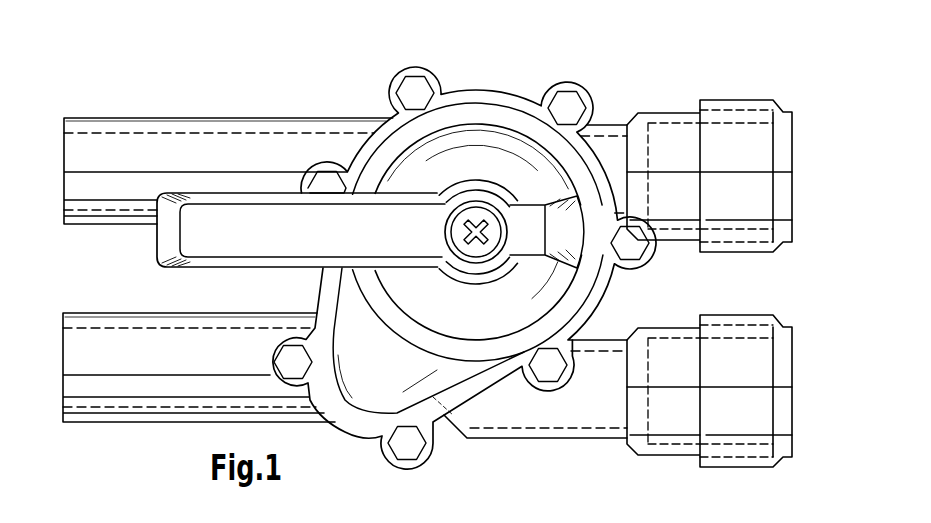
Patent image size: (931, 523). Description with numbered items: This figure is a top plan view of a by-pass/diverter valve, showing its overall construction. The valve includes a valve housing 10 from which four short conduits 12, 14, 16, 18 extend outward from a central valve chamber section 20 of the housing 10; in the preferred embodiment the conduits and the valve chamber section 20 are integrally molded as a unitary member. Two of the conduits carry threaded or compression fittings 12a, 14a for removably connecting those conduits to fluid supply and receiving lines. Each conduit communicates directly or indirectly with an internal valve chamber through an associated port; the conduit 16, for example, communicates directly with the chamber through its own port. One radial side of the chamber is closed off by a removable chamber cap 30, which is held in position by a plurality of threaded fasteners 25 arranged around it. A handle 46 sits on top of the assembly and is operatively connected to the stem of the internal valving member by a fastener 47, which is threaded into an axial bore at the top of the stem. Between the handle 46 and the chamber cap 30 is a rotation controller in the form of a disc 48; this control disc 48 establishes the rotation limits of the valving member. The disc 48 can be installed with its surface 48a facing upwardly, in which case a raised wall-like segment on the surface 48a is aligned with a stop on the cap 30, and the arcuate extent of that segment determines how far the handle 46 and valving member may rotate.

The valve housing 10 is at (381, 248).
The conduit 12 is at (603, 142).
The threaded or compression fitting 12a is at (677, 143).
The conduit 14 is at (543, 413).
The threaded or compression fitting 14a is at (667, 413).
The conduit 16 is at (153, 143).
The conduit 18 is at (167, 386).
The valve chamber section 20 is at (474, 88).
The threaded fasteners 25 is at (333, 186).
The chamber cap 30 is at (393, 379).
The handle 46 is at (203, 235).
The fastener 47 is at (477, 245).
The rotation control disc 48 is at (350, 293).
The surface of the disc 48a is at (495, 112).